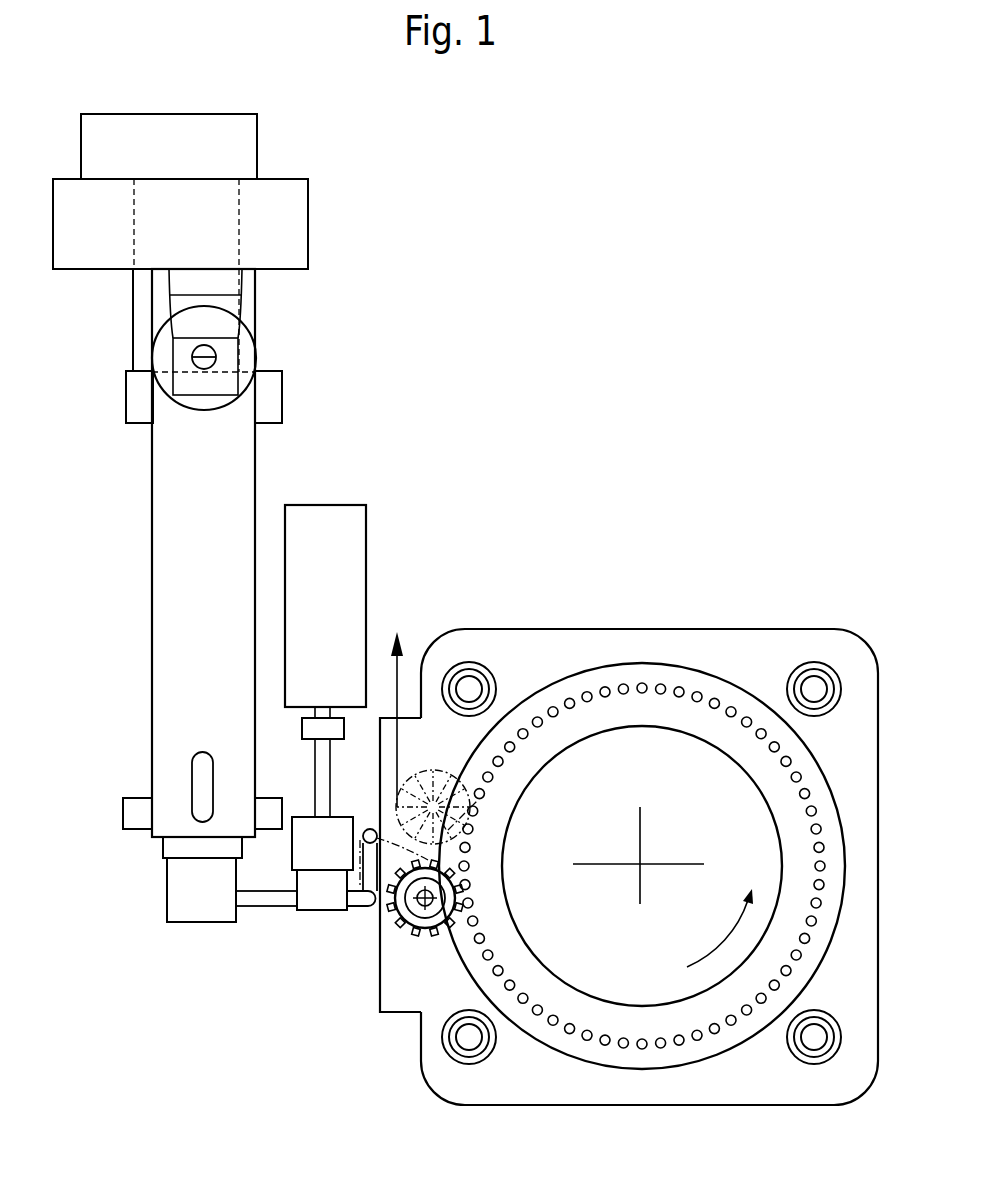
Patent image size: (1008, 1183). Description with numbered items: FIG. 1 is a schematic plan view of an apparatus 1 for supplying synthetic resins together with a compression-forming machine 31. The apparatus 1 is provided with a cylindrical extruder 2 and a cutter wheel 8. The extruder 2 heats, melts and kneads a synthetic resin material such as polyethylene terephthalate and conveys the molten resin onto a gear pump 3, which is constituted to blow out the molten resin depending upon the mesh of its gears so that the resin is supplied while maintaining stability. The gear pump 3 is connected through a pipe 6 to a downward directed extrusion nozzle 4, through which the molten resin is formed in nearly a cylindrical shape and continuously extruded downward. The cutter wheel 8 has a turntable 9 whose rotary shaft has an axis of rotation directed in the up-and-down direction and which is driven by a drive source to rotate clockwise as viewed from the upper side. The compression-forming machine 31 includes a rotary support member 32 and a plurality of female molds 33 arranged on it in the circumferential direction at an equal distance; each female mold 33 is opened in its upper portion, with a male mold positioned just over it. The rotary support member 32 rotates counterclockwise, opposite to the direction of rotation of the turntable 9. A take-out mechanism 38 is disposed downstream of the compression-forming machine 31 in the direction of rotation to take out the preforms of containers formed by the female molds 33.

The apparatus for supplying synthetic resins 1 is at (106, 565).
The cylindrical extruder 2 is at (163, 627).
The gear pump 3 is at (316, 908).
The extrusion nozzle 4 is at (369, 828).
The pipe 6 is at (363, 908).
The cutter wheel 8 is at (412, 966).
The turntable 9 is at (402, 922).
The compression-forming machine 31 is at (758, 660).
The rotary support member 32 is at (662, 662).
The female mold 33 is at (480, 856).
The take-out mechanism 38 is at (433, 758).